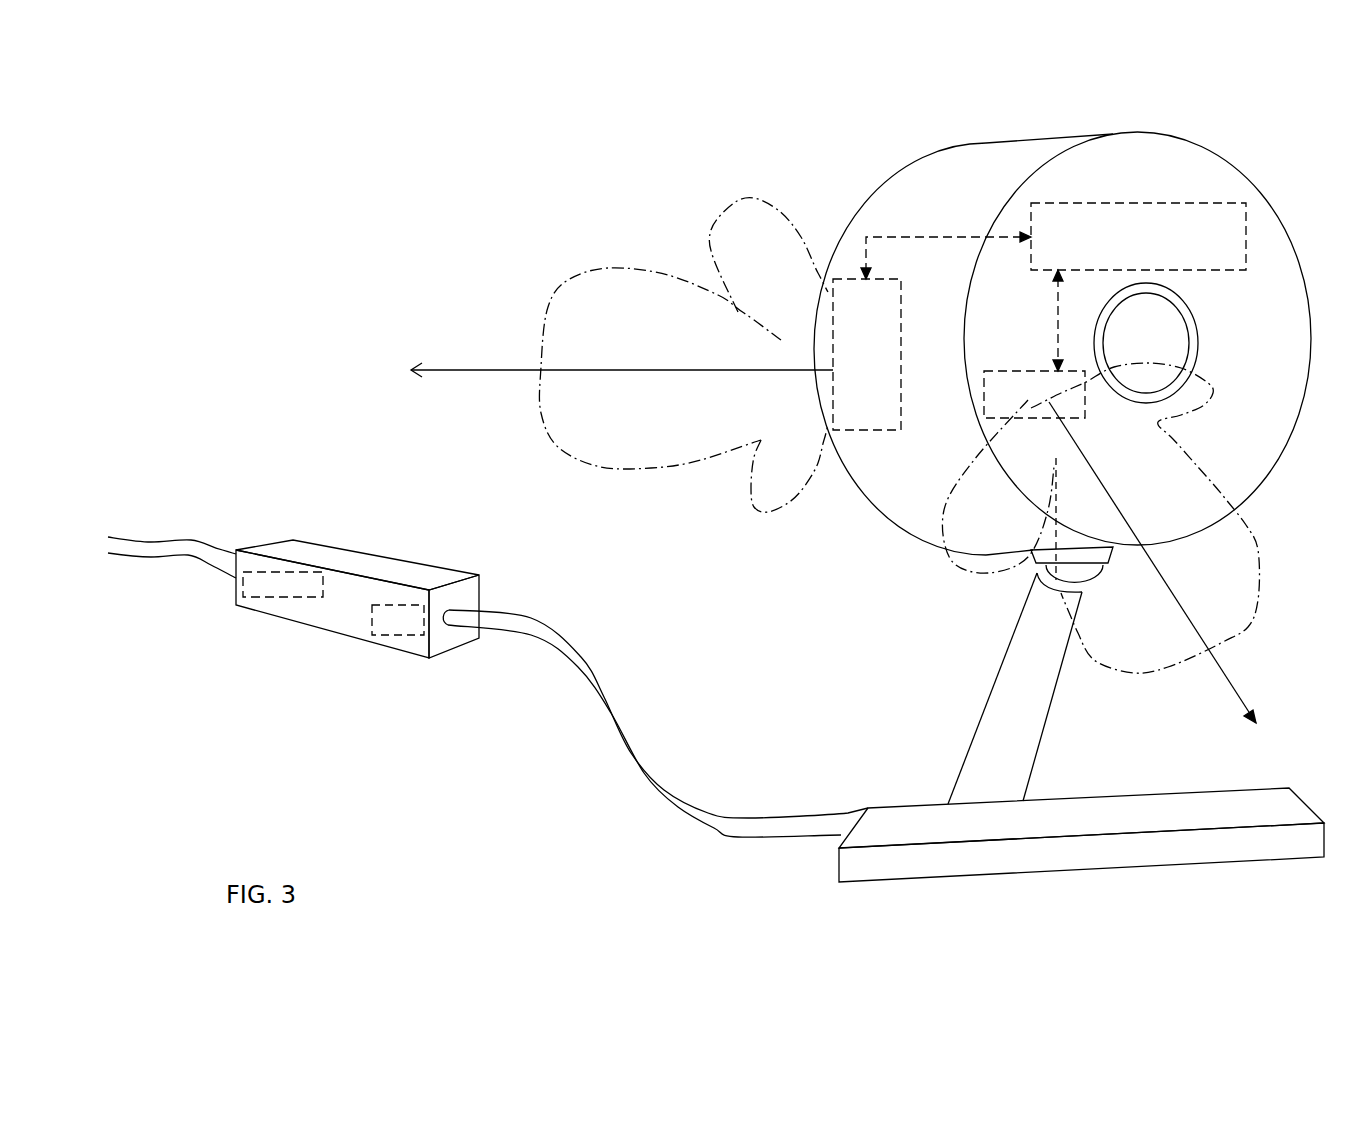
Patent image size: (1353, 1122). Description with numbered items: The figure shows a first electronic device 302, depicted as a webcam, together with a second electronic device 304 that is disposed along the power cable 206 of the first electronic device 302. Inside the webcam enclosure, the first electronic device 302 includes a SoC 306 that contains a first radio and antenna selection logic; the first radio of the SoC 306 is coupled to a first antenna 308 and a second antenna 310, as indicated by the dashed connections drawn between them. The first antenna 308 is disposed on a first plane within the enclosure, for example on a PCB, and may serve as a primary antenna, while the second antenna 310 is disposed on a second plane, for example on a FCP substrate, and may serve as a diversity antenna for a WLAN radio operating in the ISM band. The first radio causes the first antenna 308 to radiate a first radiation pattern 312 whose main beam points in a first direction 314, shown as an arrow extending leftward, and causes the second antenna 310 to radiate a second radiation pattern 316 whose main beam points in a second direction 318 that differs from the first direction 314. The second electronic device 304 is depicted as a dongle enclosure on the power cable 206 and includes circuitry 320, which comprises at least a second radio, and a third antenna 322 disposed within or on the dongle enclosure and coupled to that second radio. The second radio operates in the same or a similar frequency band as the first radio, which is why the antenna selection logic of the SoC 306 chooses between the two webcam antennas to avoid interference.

The power cable 206 is at (615, 762).
The first electronic device 302 is at (1062, 357).
The second electronic device 304 is at (293, 597).
The SoC 306 is at (1135, 203).
The first antenna 308 is at (900, 320).
The second antenna 310 is at (1027, 371).
The first radiation pattern 312 is at (552, 305).
The first direction 314 is at (443, 371).
The second radiation pattern 316 is at (1257, 545).
The second direction 318 is at (1228, 683).
The circuitry 320 is at (280, 572).
The third antenna 322 is at (400, 605).